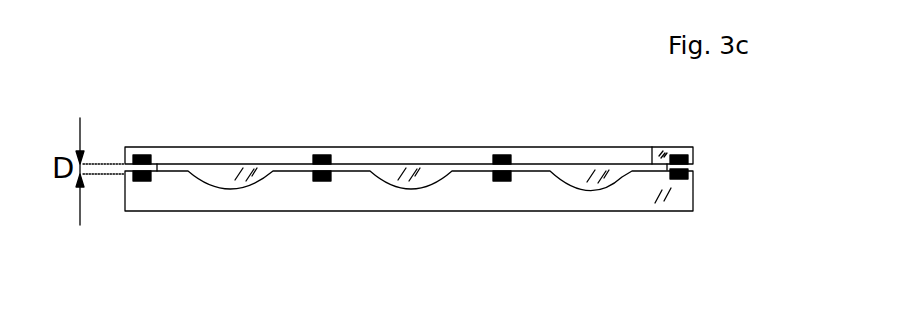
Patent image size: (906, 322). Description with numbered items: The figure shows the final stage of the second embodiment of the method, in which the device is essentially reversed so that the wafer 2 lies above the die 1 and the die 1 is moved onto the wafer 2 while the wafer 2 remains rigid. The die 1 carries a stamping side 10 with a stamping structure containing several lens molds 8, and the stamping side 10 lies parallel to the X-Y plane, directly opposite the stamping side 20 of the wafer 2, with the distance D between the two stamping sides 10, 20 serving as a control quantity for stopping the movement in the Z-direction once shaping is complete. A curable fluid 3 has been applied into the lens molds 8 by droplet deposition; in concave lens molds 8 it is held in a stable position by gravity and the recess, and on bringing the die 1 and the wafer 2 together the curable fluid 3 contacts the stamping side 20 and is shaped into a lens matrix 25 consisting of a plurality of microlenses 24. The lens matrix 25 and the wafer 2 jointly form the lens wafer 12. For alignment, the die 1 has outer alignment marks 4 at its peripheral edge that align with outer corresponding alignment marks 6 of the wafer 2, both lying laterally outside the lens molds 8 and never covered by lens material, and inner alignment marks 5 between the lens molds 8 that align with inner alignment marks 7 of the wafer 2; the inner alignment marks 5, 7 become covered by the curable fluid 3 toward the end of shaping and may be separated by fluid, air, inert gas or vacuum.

The die 1 is at (413, 200).
The wafer 2 is at (409, 158).
The curable fluid 3 is at (227, 177).
The outer alignment marks 4 is at (142, 179).
The inner alignment marks 5 is at (323, 181).
The outer corresponding alignment marks 6 is at (138, 153).
The inner alignment marks 7 is at (320, 154).
The lens molds 8 is at (233, 189).
The stamping side 10 is at (165, 171).
The lens wafer 12 is at (712, 160).
The stamping side 20 is at (652, 147).
The microlenses 24 is at (617, 173).
The lens matrix 25 is at (648, 168).